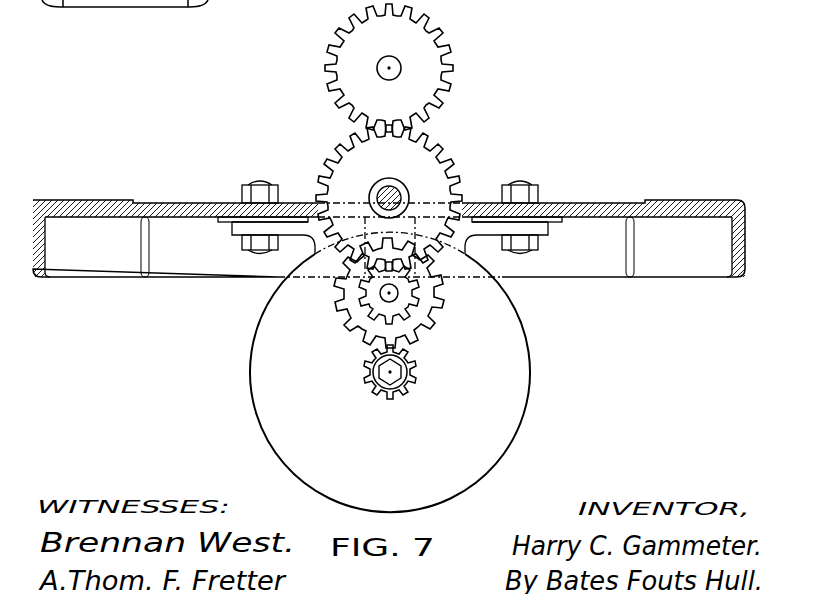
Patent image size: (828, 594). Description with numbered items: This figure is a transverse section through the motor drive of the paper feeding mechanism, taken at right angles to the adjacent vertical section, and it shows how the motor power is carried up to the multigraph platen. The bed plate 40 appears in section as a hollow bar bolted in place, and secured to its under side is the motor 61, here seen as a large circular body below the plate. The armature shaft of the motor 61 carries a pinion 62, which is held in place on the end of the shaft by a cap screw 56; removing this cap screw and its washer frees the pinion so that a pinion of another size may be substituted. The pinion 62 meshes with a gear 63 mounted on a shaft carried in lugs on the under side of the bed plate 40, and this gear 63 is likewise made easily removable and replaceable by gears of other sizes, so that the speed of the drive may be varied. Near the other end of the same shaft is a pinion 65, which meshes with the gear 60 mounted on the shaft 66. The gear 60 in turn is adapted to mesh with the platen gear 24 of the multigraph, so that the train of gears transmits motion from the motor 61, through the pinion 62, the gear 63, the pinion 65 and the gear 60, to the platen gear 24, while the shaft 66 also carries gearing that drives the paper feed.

The platen gear 24 is at (449, 59).
The bed plate 40 is at (600, 204).
The cap screw 56 is at (418, 378).
The gear 60 is at (440, 163).
The motor 61 is at (390, 372).
The pinion 62 is at (367, 382).
The gear 63 is at (360, 317).
The pinion 65 is at (403, 300).
The shaft 66 is at (400, 188).